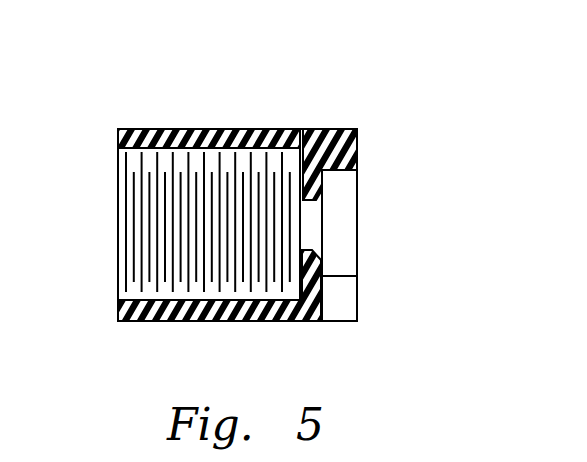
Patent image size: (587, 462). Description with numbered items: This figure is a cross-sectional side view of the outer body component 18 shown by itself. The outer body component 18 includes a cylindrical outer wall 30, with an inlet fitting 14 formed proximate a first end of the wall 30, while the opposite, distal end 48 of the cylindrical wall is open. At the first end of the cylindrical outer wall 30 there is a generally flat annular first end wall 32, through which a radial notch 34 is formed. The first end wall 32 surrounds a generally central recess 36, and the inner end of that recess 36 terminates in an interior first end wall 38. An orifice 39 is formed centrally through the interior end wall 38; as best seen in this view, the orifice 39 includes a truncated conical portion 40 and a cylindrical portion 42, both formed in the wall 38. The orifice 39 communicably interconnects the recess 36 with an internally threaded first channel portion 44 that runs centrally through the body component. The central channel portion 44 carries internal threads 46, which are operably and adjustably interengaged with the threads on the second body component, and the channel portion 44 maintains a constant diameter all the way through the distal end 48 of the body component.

The inlet fitting 14 is at (318, 242).
The outer body component 18 is at (279, 142).
The cylindrical outer wall 30 is at (195, 130).
The first end wall 32 is at (357, 147).
The radial notch 34 is at (357, 303).
The central recess 36 is at (343, 186).
The interior first end wall 38 is at (322, 264).
The orifice 39 is at (308, 220).
The truncated conical portion 40 is at (313, 195).
The cylindrical portion 42 is at (312, 248).
The first channel portion 44 is at (130, 237).
The internal threads 46 is at (166, 188).
The distal end 48 is at (118, 307).